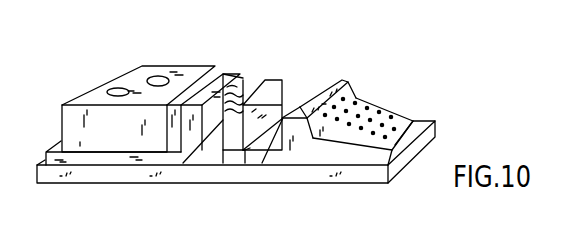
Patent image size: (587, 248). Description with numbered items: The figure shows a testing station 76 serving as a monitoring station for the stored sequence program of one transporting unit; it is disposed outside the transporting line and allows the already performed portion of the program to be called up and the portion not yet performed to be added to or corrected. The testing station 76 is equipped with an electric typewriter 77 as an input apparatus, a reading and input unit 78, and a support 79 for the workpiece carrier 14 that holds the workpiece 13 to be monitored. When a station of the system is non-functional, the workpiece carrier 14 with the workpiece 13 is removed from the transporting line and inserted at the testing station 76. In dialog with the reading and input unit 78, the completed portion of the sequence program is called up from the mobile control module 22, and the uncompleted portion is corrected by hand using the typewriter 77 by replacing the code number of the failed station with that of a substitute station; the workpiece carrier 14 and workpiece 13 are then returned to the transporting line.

The workpiece 13 is at (180, 72).
The workpiece carrier 14 is at (125, 162).
The mobile control module 22 is at (235, 73).
The testing station 76 is at (330, 65).
The electric typewriter 77 is at (380, 106).
The reading and input unit 78 is at (233, 150).
The support 79 is at (252, 175).